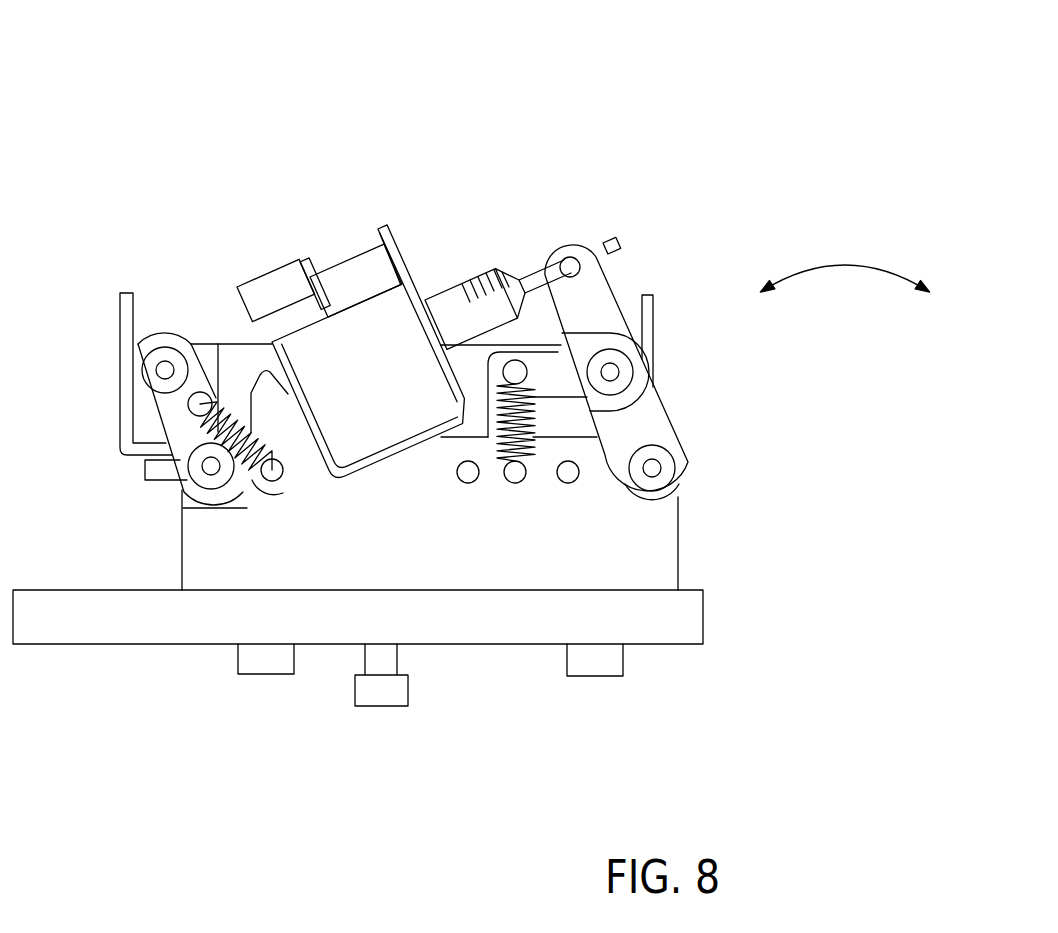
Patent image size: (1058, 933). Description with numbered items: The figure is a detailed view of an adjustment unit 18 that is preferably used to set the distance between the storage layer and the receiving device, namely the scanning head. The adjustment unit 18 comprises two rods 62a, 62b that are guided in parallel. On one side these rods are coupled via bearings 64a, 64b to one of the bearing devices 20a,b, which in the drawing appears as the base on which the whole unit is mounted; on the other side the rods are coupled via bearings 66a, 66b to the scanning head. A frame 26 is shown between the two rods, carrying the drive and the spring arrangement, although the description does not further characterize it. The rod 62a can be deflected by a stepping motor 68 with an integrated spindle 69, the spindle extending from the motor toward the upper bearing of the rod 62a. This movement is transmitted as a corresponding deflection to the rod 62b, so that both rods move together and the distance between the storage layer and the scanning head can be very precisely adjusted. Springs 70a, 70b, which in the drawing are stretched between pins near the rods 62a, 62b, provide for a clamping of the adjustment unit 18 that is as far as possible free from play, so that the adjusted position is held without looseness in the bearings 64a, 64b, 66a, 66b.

The adjustment unit 18 is at (676, 117).
The bearing devices 20a,b is at (670, 543).
The frame 26 is at (237, 360).
The rod 62a is at (657, 415).
The rod 62b is at (175, 414).
The bearing 64a is at (663, 468).
The bearing 64b is at (198, 476).
The bearing 66a is at (618, 363).
The bearing 66b is at (162, 361).
The stepping motor 68 is at (352, 330).
The spindle 69 is at (452, 287).
The spring 70a is at (500, 487).
The spring 70b is at (263, 488).